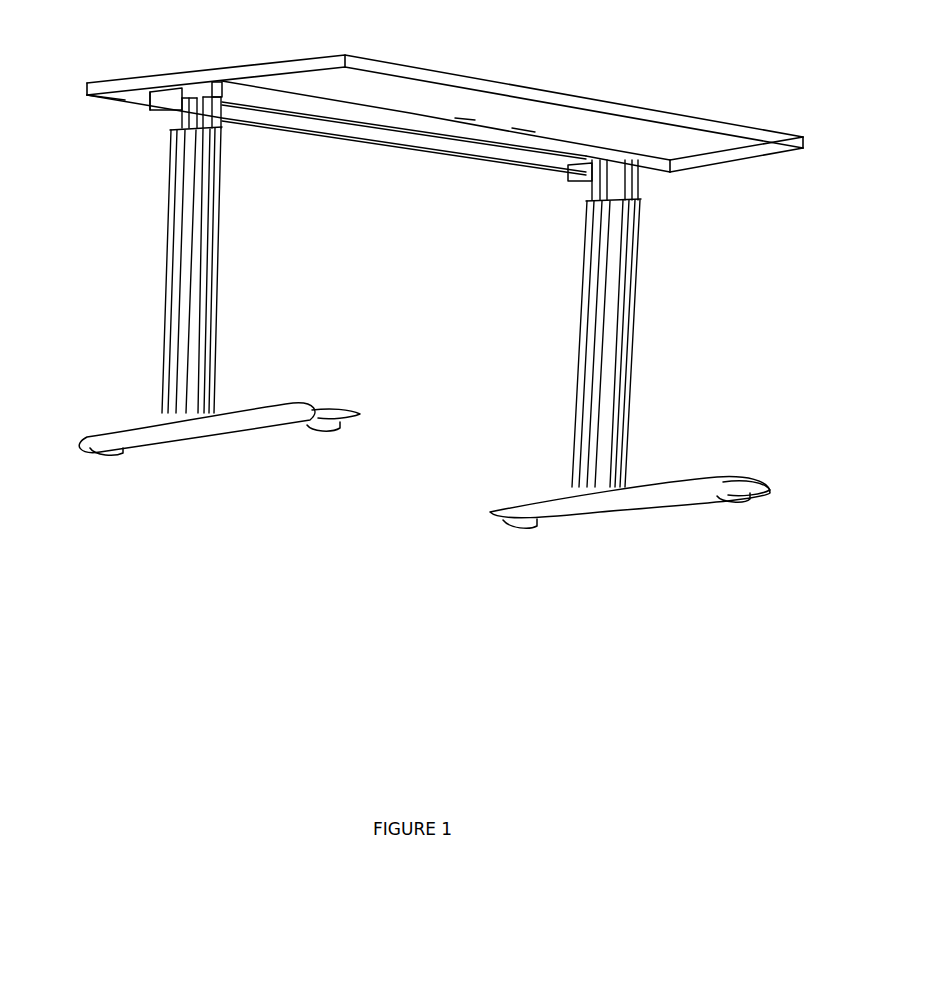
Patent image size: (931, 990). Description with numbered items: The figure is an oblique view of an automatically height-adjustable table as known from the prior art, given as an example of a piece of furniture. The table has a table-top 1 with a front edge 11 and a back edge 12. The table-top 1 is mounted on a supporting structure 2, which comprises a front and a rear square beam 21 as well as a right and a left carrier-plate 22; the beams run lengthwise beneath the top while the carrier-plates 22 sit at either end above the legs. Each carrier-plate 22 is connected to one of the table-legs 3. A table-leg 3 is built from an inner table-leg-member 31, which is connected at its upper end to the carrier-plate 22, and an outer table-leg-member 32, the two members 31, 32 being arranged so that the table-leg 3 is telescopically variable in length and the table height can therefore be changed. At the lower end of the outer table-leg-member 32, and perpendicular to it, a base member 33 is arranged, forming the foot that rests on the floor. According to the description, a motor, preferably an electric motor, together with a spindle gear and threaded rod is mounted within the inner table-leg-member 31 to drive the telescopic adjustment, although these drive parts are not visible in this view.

The table-top 1 is at (469, 66).
The front edge 11 is at (575, 103).
The back edge 12 is at (125, 103).
The supporting structure 2 is at (424, 168).
The square beam 21 is at (537, 143).
The carrier-plate 22 is at (172, 102).
The table-leg 3 is at (424, 312).
The inner table-leg-member 31 is at (228, 124).
The outer table-leg-member 32 is at (205, 250).
The base member 33 is at (370, 412).